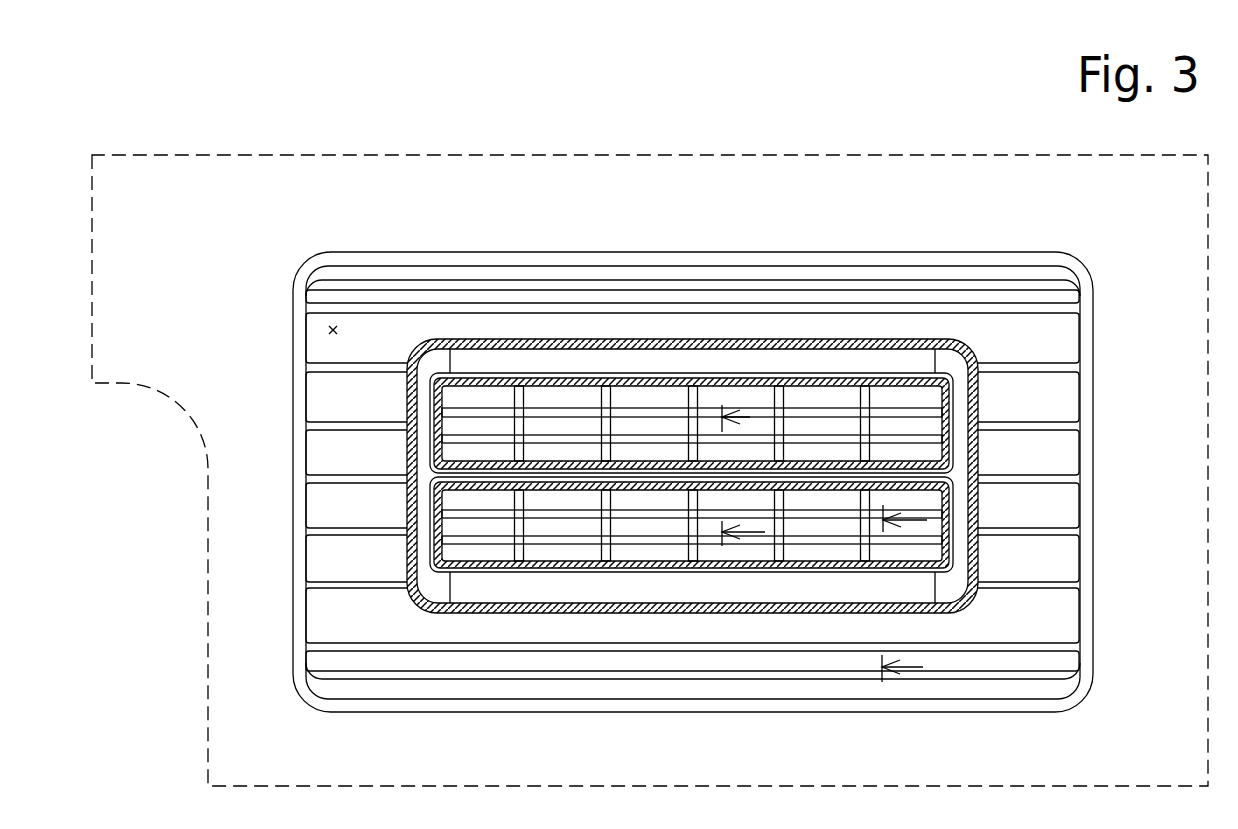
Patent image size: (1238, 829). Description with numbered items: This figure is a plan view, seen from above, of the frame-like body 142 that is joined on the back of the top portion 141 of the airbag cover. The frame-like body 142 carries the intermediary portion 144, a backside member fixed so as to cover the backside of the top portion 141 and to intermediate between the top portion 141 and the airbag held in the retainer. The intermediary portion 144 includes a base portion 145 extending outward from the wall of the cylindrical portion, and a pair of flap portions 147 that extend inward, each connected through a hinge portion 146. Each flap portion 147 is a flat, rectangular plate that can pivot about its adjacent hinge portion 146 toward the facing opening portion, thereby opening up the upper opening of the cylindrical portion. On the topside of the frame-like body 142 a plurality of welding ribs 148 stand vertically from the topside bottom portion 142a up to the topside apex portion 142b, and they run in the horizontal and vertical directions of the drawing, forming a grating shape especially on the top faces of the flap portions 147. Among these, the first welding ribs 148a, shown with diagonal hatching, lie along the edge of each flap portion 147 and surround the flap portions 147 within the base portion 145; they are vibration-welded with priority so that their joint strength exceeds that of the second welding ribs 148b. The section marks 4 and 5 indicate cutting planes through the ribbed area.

The top portion 141 is at (910, 195).
The frame-like body 142 is at (641, 238).
The topside bottom portion 142a is at (332, 325).
The topside apex portion 142b is at (370, 310).
The intermediary portion 144 is at (1142, 412).
The base portion 145 is at (983, 570).
The hinge portion 146 is at (735, 367).
The flap portion 147 is at (957, 518).
The welding ribs 148 is at (632, 408).
The first welding ribs 148a is at (407, 560).
The second welding ribs 148b is at (645, 440).
The section line 4- 4 is at (743, 482).
The section line 5- 5 is at (904, 595).